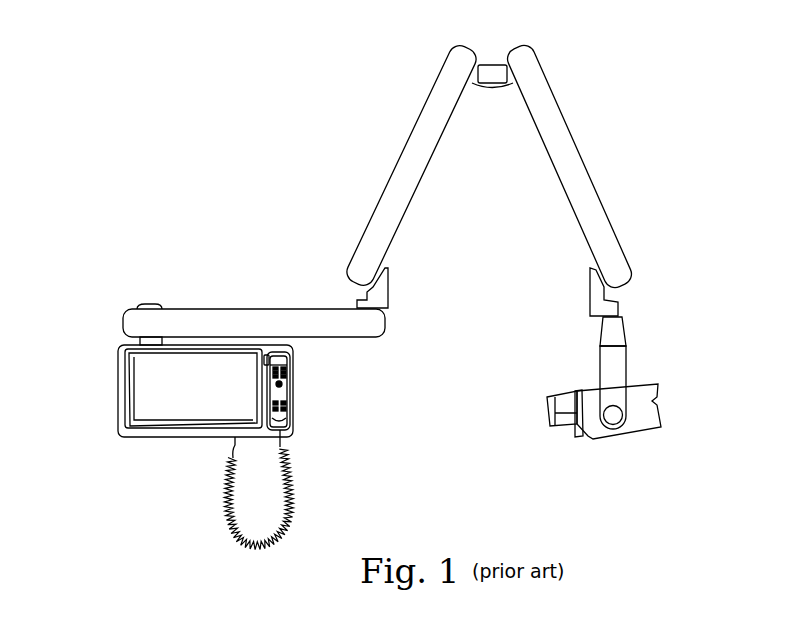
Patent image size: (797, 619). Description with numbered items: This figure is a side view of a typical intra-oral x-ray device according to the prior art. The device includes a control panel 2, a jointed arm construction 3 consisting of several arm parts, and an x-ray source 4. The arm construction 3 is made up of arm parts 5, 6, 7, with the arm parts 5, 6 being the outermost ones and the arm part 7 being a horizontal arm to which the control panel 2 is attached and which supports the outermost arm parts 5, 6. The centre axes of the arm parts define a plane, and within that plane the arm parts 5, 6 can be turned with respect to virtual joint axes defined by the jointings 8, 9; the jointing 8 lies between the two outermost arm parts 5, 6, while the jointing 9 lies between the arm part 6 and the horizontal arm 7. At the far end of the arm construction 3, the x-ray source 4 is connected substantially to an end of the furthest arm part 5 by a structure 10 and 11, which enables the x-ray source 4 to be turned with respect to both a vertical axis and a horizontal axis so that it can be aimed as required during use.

The control panel 2 is at (146, 430).
The arm construction 3 is at (395, 100).
The x-ray source 4 is at (647, 420).
The arm part 5 is at (592, 177).
The arm part 6 is at (400, 153).
The horizontal arm 7 is at (233, 310).
The jointing 8 is at (490, 78).
The jointing 9 is at (388, 276).
The structure 10 is at (588, 302).
The structure 11 is at (626, 332).